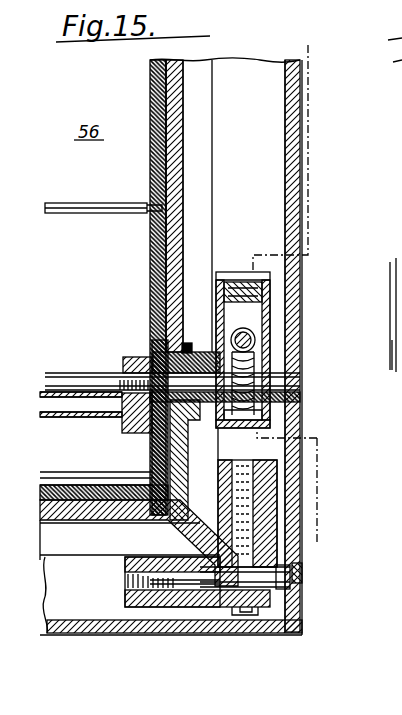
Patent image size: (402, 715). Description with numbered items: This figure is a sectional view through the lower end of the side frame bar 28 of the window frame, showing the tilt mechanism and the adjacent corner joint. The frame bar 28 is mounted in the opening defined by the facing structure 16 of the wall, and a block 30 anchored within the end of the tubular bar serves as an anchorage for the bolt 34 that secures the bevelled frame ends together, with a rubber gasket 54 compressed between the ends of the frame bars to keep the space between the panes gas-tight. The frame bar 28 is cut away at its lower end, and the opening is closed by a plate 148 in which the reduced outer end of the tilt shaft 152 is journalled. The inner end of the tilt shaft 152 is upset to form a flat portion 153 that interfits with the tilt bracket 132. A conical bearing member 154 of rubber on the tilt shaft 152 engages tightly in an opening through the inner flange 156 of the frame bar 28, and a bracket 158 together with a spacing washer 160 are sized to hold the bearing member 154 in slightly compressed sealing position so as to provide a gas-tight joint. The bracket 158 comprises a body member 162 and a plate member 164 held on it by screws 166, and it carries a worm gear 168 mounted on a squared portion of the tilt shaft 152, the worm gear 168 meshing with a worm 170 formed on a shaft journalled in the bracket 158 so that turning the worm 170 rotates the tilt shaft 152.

The facing structure 16 is at (283, 80).
The side frame bar 28 is at (298, 158).
The block 30 is at (266, 498).
The bolt 34 is at (282, 585).
The rubber gasket 54 is at (197, 532).
The tilt bracket 132 is at (137, 438).
The plate 148 is at (287, 308).
The tilt shaft 152 is at (300, 379).
The flat portion 153 is at (120, 383).
The conical bearing member 154 is at (205, 420).
The inner flange 156 is at (172, 150).
The bracket 158 is at (308, 214).
The spacing washer 160 is at (280, 365).
The body member 162 is at (300, 310).
The plate member 164 is at (220, 335).
The screw 166 is at (220, 300).
The worm gear 168 is at (270, 412).
The worm 170 is at (298, 331).